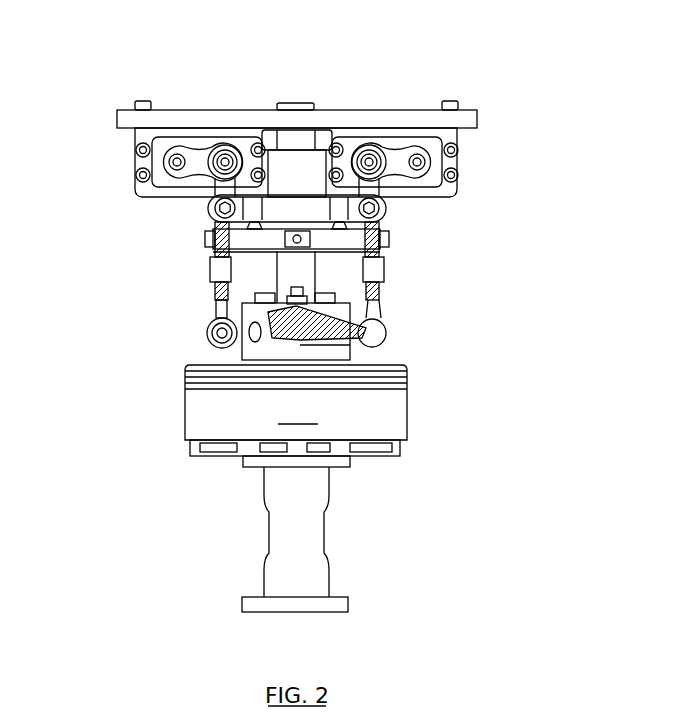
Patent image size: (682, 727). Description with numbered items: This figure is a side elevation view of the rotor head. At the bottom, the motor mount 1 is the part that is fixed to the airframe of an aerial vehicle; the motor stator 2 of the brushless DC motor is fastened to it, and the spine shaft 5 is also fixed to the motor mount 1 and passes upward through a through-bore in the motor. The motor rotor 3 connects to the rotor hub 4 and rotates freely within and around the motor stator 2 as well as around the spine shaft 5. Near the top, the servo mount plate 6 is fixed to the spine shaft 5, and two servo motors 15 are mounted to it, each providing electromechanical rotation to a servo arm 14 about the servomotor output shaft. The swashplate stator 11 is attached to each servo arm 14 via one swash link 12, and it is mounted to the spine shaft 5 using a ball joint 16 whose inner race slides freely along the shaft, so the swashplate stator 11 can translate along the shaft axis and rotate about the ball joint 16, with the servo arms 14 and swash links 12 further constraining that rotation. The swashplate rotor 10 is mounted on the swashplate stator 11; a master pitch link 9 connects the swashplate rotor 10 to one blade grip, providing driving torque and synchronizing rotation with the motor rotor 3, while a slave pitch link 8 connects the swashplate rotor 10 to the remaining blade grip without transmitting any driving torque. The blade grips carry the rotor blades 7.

The motor mount 1 is at (350, 611).
The motor stator 2 is at (408, 450).
The motor rotor 3 is at (410, 408).
The rotor hub 4 is at (332, 342).
The spine shaft 5 is at (298, 272).
The servo mount plate 6 is at (477, 108).
The rotor blades 7 is at (230, 342).
The slave pitch link 8 is at (387, 275).
The master pitch link 9 is at (203, 273).
The swashplate rotor 10 is at (337, 237).
The swashplate stator 11 is at (338, 212).
The swash link 12 is at (225, 184).
The servo arm 14 is at (200, 160).
The servo motor 15 is at (205, 147).
The ball joint 16 is at (262, 254).